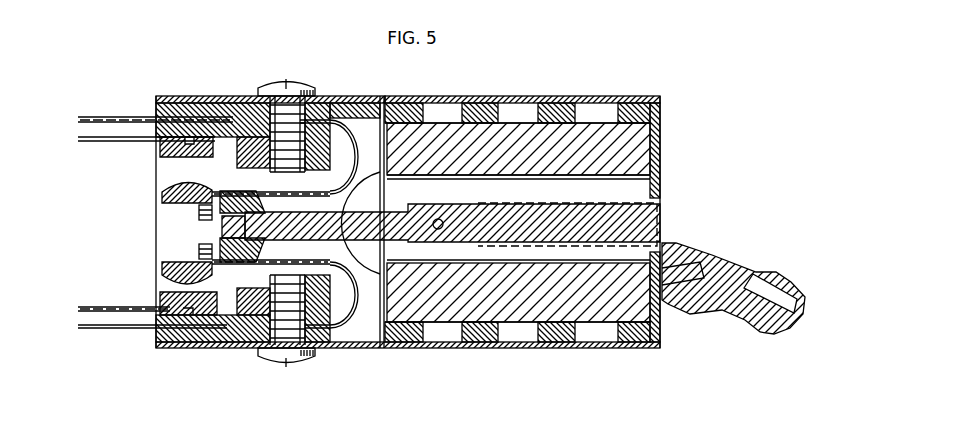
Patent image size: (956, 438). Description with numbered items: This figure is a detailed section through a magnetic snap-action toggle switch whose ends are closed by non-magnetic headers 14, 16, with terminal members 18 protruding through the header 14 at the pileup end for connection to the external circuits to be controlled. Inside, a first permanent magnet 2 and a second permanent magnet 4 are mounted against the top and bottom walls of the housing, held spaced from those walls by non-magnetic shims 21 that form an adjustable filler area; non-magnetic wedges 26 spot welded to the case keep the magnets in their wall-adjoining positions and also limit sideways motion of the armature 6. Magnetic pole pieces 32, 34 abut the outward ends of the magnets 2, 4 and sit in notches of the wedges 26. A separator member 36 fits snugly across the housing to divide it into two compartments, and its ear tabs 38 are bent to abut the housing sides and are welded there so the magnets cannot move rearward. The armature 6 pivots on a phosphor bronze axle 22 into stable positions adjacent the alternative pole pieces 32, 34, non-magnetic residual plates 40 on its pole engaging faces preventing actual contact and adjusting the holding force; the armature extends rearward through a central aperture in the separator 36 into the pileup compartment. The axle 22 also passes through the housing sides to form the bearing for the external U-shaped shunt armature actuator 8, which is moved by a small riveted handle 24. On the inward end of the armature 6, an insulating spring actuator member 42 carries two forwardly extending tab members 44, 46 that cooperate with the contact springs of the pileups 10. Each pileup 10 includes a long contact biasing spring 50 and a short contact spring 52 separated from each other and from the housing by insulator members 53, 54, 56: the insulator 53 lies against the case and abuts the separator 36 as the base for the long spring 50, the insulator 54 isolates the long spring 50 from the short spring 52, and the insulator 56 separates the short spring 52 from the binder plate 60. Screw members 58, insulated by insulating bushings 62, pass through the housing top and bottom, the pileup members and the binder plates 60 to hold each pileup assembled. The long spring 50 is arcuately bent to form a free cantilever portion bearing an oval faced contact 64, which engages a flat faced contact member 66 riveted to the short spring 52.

The first permanent magnet 2 is at (590, 130).
The second permanent magnet 4 is at (593, 320).
The armature 6 is at (663, 215).
The armature actuator 8 is at (684, 251).
The pileup 10 is at (325, 255).
The header 14 is at (156, 174).
The header 16 is at (661, 108).
The terminal members 18 is at (98, 306).
The non-magnetic shims 21 is at (548, 103).
The axle 22 is at (446, 236).
The handle 24 is at (789, 278).
The non-magnetic wedge 26 is at (653, 184).
The magnetic pole piece 32 is at (661, 134).
The magnetic pole piece 34 is at (657, 316).
The separator member 36 is at (383, 101).
The ear tab 38 is at (384, 345).
The residual plates 40 is at (552, 212).
The spring actuator member 42 is at (260, 193).
The tab member 44 is at (199, 213).
The tab member 46 is at (199, 250).
The long contact biasing spring 50 is at (368, 103).
The short contact spring 52 is at (205, 105).
The insulator member 53 is at (167, 103).
The second pileup insulator 54 is at (247, 122).
The insulator member 56 is at (240, 150).
The screw member 58 is at (283, 80).
The binder plate 60 is at (320, 176).
The insulating bushing 62 is at (312, 96).
The oval faced contact 64 is at (162, 196).
The flat faced contact member 66 is at (158, 148).